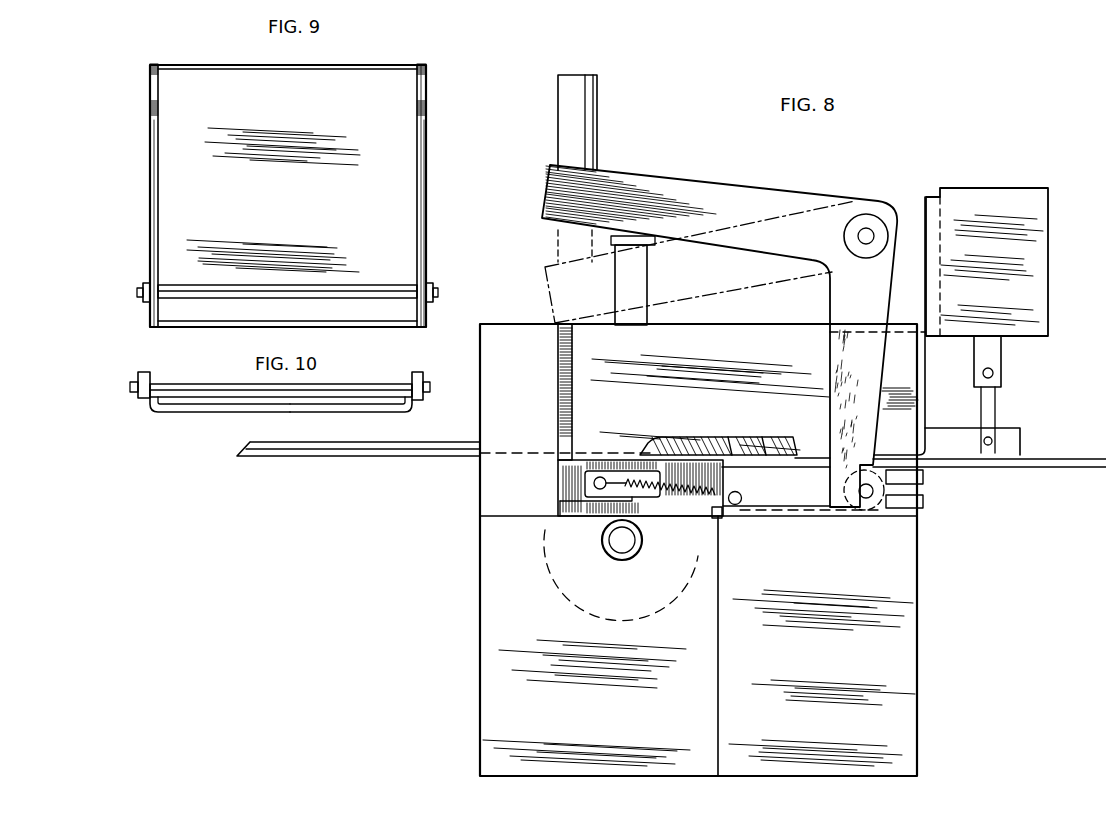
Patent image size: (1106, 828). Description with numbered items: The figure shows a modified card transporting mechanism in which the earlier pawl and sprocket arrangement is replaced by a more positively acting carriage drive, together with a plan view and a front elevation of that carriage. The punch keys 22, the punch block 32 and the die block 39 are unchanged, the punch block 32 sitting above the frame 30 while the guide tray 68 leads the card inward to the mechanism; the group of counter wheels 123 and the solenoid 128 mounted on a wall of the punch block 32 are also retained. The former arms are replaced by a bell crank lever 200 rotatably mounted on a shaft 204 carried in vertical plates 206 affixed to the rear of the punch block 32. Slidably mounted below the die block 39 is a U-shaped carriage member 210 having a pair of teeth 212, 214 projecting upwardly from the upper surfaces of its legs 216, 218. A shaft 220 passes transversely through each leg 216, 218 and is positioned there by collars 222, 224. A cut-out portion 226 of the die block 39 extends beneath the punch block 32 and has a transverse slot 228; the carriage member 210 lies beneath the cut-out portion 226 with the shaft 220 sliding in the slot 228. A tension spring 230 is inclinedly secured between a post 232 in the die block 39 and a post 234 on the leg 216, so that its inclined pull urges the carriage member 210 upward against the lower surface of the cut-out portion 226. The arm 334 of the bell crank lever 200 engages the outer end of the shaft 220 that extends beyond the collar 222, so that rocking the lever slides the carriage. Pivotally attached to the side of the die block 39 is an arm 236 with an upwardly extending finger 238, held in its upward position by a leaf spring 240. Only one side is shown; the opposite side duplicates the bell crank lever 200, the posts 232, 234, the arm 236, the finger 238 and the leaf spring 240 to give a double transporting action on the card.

In FIG. 8, the punch keys 22 is at (575, 115).
In FIG. 8, the inverted U-shaped frame 30 is at (503, 697).
In FIG. 8, the punch guide block 32 is at (598, 340).
In FIG. 8, the punch die block 39 is at (560, 480).
In FIG. 8, the guide tray 68 is at (362, 456).
In FIG. 8, the group of counter wheels 123 is at (550, 556).
In FIG. 8, the solenoid 128 is at (1028, 217).
In FIG. 8, the bell crank lever 200 is at (740, 200).
In FIG. 8, the shaft 204 is at (866, 228).
In FIG. 8, the vertical plates 206 is at (905, 348).
In FIG. 9, the U-shaped carriage member 210 is at (292, 78).
In FIG. 9, the tooth 212 is at (157, 100).
In FIG. 8, the tooth 212 is at (735, 450).
In FIG. 9, the tooth 214 is at (417, 100).
In FIG. 9, the leg 216 is at (158, 190).
In FIG. 10, the leg 216 is at (148, 400).
In FIG. 8, the leg 216 is at (810, 498).
In FIG. 9, the leg 218 is at (420, 175).
In FIG. 10, the leg 218 is at (418, 405).
In FIG. 9, the shaft 220 is at (325, 290).
In FIG. 10, the shaft 220 is at (335, 385).
In FIG. 8, the shaft 220 is at (875, 492).
In FIG. 9, the collar 222 is at (140, 285).
In FIG. 10, the collar 222 is at (142, 372).
In FIG. 8, the collar 222 is at (870, 508).
In FIG. 9, the collar 224 is at (434, 286).
In FIG. 10, the collar 224 is at (428, 382).
In FIG. 8, the cut-out portion 226 is at (715, 518).
In FIG. 8, the transverse slot 228 is at (915, 487).
In FIG. 8, the tension spring 230 is at (690, 492).
In FIG. 8, the post 232 is at (590, 468).
In FIG. 8, the post 234 is at (738, 504).
In FIG. 8, the arm 236 is at (618, 470).
In FIG. 8, the finger 238 is at (657, 465).
In FIG. 8, the leaf spring 240 is at (585, 505).
In FIG. 8, the arm 334 is at (850, 357).